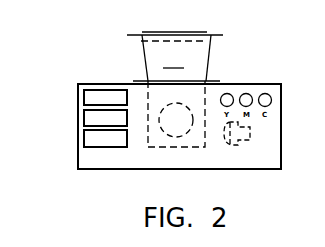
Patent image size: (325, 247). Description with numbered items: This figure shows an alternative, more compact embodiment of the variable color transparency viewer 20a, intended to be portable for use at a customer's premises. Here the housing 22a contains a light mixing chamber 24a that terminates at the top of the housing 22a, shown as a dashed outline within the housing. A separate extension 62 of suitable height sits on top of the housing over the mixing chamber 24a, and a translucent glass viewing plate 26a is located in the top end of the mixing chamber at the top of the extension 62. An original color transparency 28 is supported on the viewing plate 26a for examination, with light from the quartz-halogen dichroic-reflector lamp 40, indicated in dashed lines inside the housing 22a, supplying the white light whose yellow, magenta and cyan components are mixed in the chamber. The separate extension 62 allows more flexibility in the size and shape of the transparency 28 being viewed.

The transparency viewer 20a is at (78, 83).
The housing 22a is at (78, 124).
The mixing chamber 24a is at (186, 128).
The translucent glass viewing plate 26a is at (147, 42).
The original color transparency 28 is at (180, 32).
The extension 62 is at (176, 58).
The quartz-halogen dichroic-reflector lamp 40 is at (235, 145).